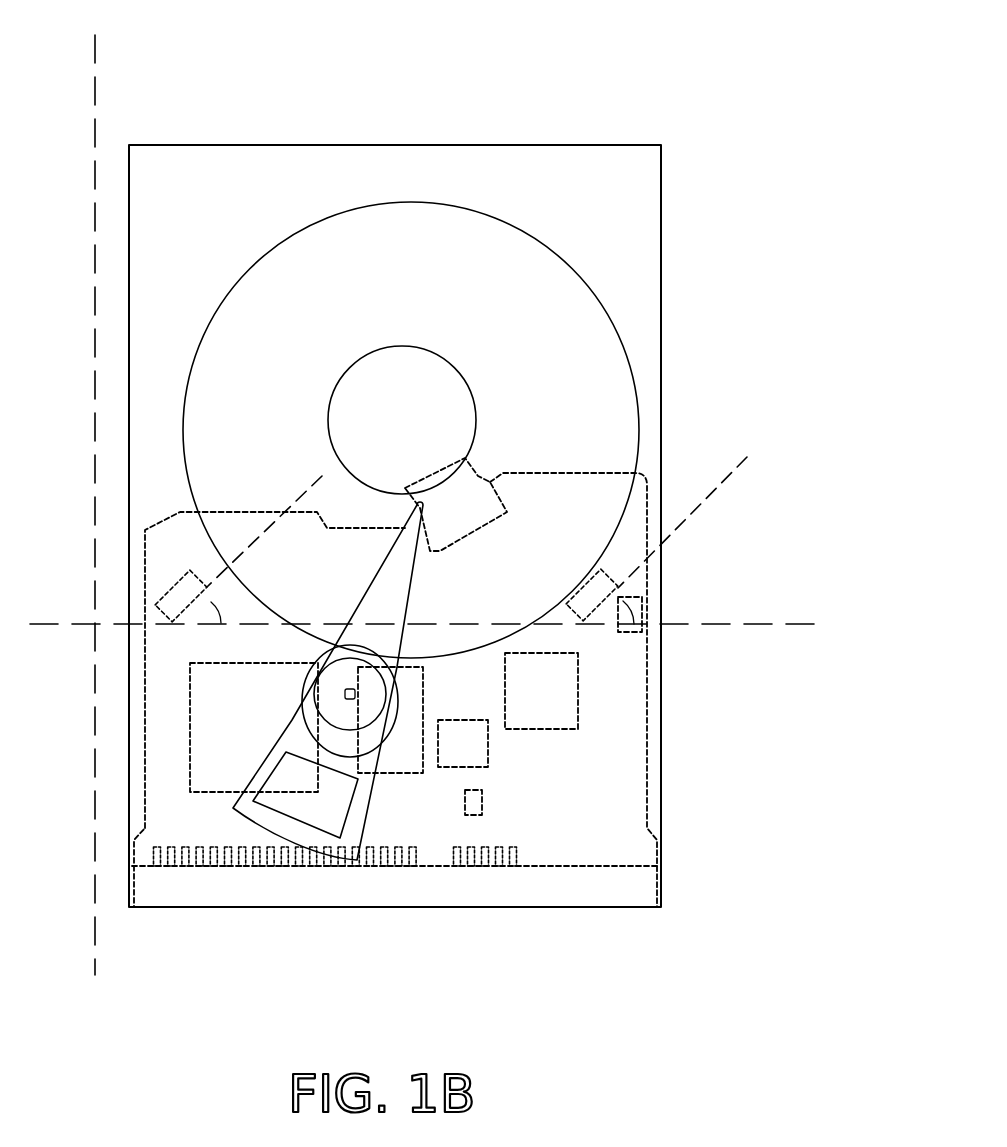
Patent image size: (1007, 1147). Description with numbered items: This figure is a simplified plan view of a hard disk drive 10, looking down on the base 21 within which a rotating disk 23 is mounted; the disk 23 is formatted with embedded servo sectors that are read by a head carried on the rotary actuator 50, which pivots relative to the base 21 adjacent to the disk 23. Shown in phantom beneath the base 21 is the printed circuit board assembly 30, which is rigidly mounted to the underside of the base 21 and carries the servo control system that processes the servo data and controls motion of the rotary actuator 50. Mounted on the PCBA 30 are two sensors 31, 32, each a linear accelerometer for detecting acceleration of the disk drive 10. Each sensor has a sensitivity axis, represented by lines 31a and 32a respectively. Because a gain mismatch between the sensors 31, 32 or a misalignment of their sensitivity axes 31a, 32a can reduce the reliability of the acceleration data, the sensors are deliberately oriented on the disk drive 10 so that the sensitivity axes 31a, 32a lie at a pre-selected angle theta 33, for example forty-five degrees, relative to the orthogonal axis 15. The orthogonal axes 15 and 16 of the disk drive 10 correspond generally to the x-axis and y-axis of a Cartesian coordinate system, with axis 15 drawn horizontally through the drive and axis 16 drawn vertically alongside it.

The hard disk drive 10 is at (694, 95).
The orthogonal axis 15 is at (793, 613).
The orthogonal axis 16 is at (94, 54).
The base 21 is at (662, 294).
The rotating disk 23 is at (562, 266).
The printed circuit board assembly 30 is at (647, 688).
The sensor 31 is at (582, 580).
The sensitivity axis 31a is at (692, 525).
The sensor 32 is at (175, 588).
The sensitivity axis 32a is at (258, 545).
The pre-selected angle θ 33 is at (602, 607).
The rotary actuator 50 is at (312, 655).